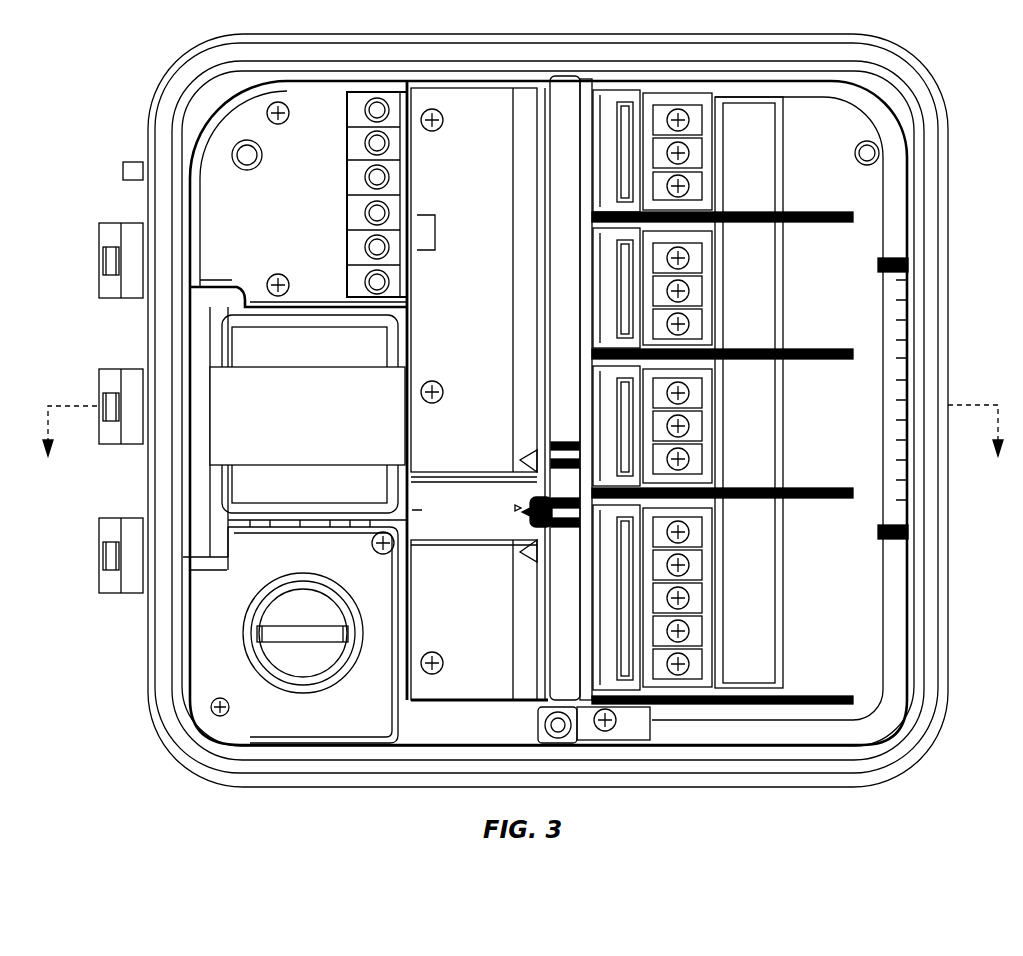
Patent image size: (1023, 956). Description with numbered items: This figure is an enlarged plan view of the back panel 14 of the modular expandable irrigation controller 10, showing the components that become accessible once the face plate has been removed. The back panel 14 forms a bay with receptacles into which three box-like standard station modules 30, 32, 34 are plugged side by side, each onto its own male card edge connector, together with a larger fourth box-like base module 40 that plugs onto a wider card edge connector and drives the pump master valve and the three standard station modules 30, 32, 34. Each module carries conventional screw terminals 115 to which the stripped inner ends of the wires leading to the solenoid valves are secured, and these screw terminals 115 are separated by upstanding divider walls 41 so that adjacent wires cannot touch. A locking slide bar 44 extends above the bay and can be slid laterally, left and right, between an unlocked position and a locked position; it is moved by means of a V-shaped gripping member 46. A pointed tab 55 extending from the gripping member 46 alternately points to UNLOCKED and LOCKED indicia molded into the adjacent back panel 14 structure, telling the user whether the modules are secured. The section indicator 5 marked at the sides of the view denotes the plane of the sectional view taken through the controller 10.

The modular expandable irrigation controller 10 is at (523, 431).
The back panel 14 is at (764, 786).
The standard station module 30 is at (697, 415).
The standard station module 32 is at (698, 283).
The standard station module 34 is at (700, 178).
The base module 40 is at (697, 592).
The divider walls 41 is at (708, 100).
The locking slide bar 44 is at (565, 178).
The V-shaped gripping member 46 is at (552, 528).
The pointed tab 55 is at (527, 530).
The screw terminals 115 is at (690, 157).
The section line 5- 5 is at (523, 446).